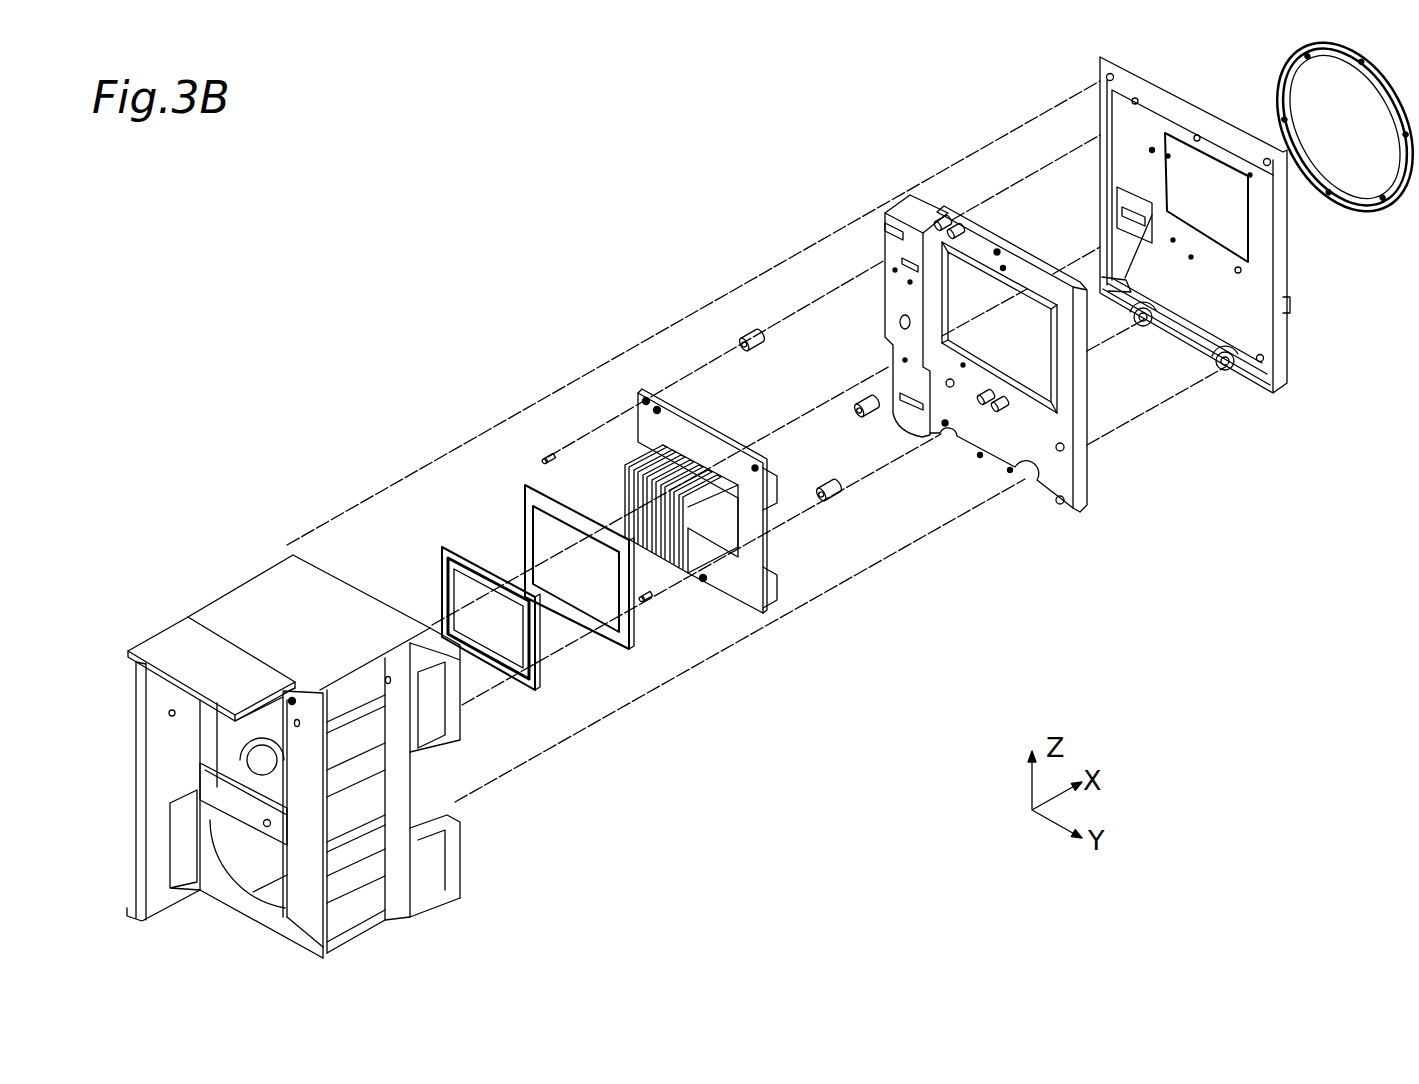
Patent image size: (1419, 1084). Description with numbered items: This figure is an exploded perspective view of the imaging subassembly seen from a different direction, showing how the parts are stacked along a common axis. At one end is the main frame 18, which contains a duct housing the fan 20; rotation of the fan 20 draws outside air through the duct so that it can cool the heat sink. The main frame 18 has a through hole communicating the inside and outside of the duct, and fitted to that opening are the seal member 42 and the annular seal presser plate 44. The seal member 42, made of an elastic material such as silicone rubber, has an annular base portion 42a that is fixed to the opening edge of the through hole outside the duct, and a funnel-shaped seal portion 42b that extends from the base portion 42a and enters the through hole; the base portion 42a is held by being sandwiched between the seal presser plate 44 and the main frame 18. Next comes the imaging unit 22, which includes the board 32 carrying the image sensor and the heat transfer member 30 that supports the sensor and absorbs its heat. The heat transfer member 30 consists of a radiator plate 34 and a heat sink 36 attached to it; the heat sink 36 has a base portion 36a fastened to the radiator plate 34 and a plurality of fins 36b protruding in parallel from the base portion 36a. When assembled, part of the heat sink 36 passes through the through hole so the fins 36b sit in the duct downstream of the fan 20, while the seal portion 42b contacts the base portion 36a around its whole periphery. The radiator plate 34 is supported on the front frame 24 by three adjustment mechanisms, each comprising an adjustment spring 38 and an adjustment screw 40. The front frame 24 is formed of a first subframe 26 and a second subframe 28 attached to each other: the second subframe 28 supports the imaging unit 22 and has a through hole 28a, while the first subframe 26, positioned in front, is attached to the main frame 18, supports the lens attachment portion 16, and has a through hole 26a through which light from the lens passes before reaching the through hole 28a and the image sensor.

The lens attachment portion 16 is at (1370, 212).
The main frame 18 is at (293, 753).
The fan 20 is at (227, 771).
The imaging unit 22 is at (621, 378).
The front frame 24 is at (1093, 293).
The first subframe 26 is at (1195, 275).
The through hole 26a is at (1212, 233).
The second subframe 28 is at (1053, 353).
The through hole 28a is at (1020, 367).
The heat transfer member 30 is at (714, 543).
The board 32 is at (772, 540).
The radiator plate 34 is at (777, 587).
The heat sink 36 is at (676, 535).
The base portion 36a is at (702, 460).
The fins 36b is at (622, 505).
The adjustment spring 38 is at (762, 343).
The adjustment screw 40 is at (550, 455).
The seal member 42 is at (454, 621).
The base portion 42a is at (438, 582).
The seal portion 42b is at (508, 673).
The seal presser plate 44 is at (620, 630).